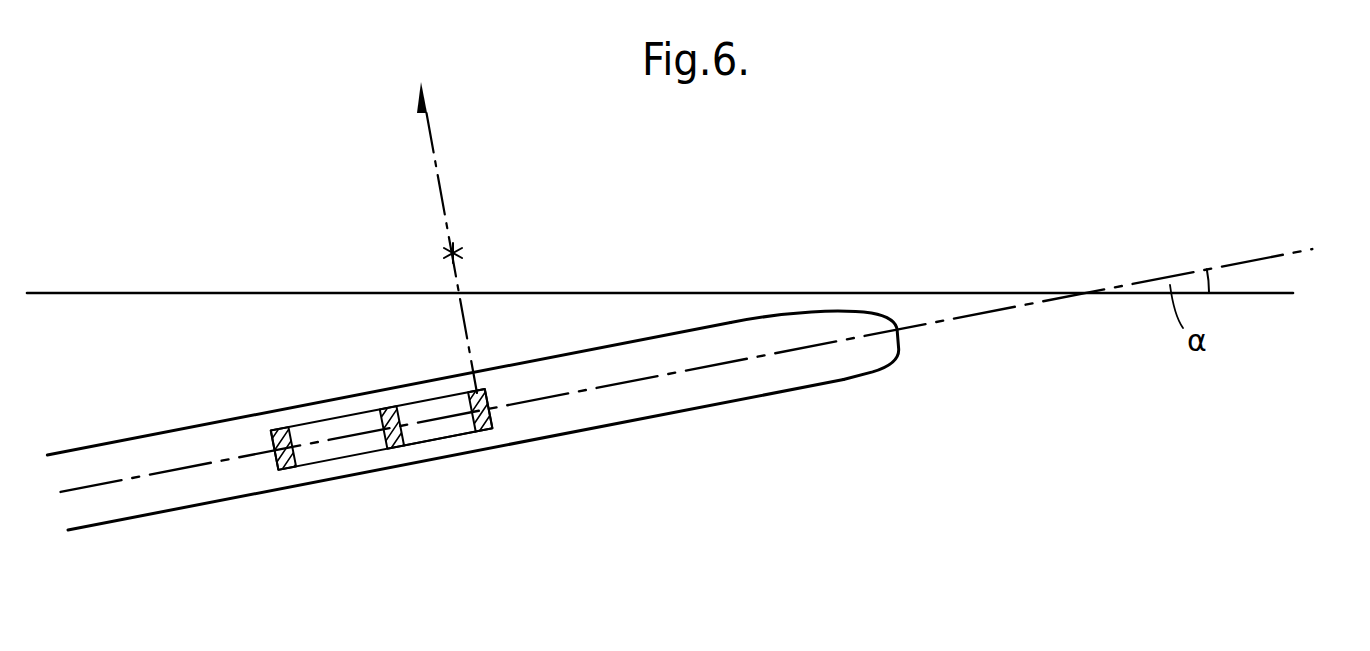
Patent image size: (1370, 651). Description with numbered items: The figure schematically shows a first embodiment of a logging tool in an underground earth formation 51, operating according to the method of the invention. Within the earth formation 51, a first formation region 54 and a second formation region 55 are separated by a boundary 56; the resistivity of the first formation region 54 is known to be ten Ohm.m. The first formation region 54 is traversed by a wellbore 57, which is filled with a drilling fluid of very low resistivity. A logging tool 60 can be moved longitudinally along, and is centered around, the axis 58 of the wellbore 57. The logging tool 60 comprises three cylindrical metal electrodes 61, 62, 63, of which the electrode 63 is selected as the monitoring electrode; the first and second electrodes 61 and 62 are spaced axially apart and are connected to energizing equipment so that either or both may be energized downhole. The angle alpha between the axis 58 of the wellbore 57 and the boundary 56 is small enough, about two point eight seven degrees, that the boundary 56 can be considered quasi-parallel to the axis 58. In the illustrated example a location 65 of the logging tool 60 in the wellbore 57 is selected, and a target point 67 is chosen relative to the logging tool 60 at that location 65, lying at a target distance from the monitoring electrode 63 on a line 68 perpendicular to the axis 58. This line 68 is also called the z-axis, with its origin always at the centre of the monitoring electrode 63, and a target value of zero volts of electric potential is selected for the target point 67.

The earth formation 51 is at (1357, 301).
The first formation region 54 is at (1058, 392).
The second formation region 55 is at (1058, 231).
The boundary 56 is at (955, 291).
The wellbore 57 is at (837, 380).
The axis of the wellbore 58 is at (655, 382).
The logging tool 60 is at (348, 466).
The first electrode 61 is at (285, 468).
The second electrode 62 is at (397, 445).
The monitoring electrode 63 is at (489, 426).
The location 65 is at (440, 448).
The target point 67 is at (458, 253).
The line (z-axis) 68 is at (440, 176).